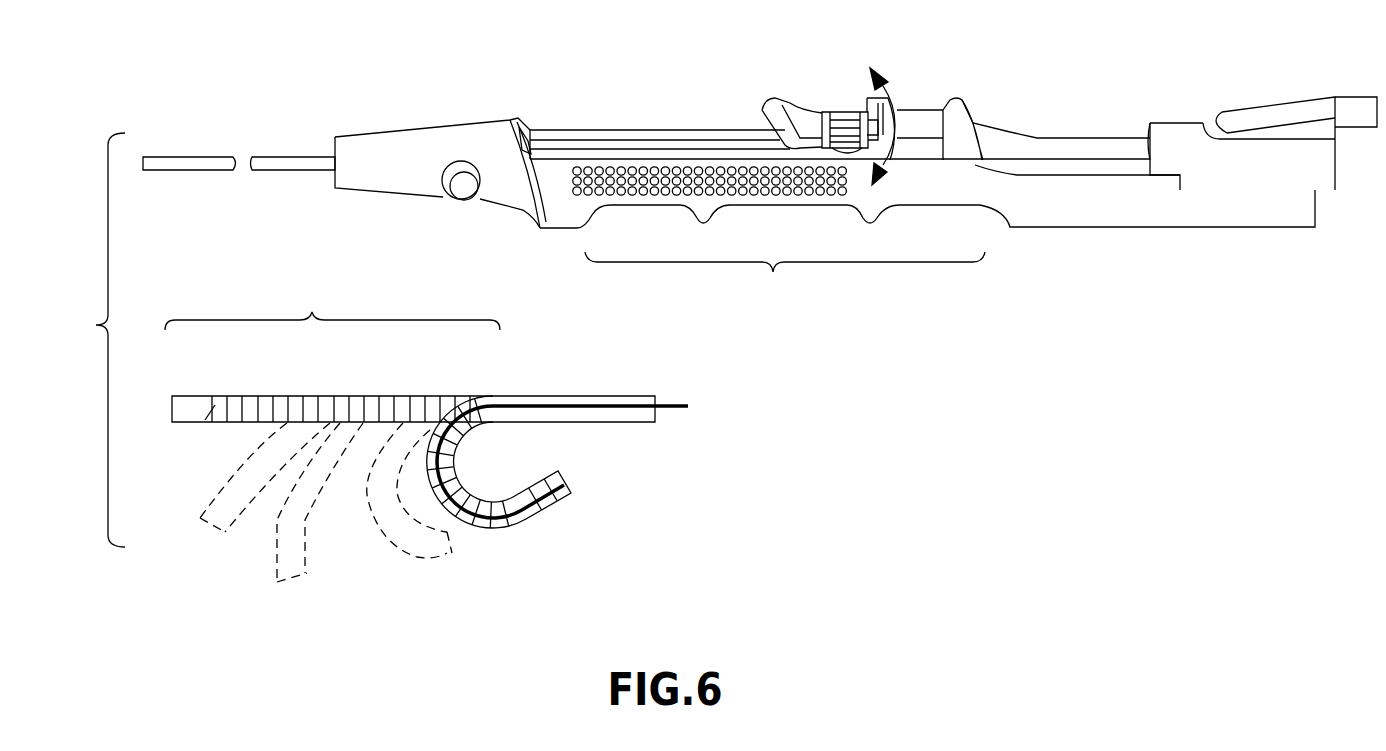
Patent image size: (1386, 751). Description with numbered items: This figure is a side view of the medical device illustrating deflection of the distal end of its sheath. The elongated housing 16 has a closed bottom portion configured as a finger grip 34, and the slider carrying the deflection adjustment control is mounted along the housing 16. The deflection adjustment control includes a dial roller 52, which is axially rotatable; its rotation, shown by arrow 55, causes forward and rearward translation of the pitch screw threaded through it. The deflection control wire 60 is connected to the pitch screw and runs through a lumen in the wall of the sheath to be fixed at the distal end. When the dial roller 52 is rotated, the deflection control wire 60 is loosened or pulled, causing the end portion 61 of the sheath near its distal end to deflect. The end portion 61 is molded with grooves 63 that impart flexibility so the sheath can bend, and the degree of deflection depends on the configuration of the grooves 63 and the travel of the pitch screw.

The housing 16 is at (430, 127).
The finger grip 34 is at (779, 237).
The dial roller 52 is at (847, 125).
The arrow 55 is at (892, 100).
The deflection control wire 60 is at (683, 406).
The end portion 61 is at (312, 318).
The grooves 63 is at (308, 406).